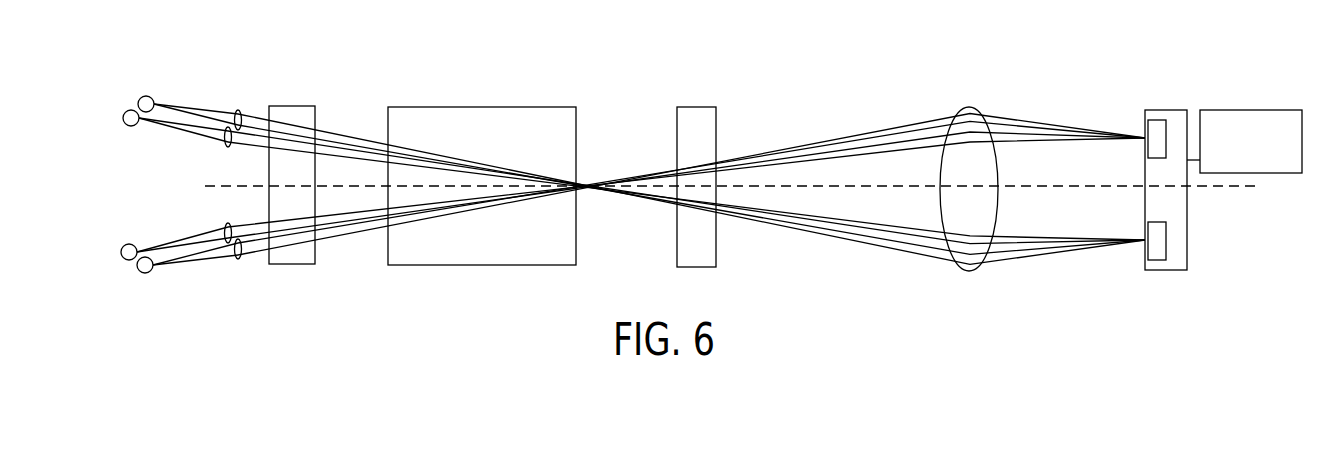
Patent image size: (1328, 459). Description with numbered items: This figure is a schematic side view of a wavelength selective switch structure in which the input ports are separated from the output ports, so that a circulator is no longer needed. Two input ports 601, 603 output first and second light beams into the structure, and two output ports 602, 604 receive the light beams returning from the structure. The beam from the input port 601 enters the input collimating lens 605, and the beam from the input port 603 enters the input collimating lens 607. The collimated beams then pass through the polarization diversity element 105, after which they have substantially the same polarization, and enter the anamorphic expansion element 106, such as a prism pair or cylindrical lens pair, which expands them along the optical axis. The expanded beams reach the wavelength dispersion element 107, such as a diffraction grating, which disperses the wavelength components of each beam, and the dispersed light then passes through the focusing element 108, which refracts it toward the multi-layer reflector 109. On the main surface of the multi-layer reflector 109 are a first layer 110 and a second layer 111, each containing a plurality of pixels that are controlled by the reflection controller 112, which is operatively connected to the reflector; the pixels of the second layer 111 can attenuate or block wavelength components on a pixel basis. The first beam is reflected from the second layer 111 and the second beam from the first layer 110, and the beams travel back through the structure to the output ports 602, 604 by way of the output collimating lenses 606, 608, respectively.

The input port 601 is at (138, 100).
The output port 602 is at (123, 116).
The input port 603 is at (121, 250).
The output port 604 is at (137, 270).
The input collimating lens 605 is at (239, 111).
The output collimating lens 606 is at (226, 146).
The input collimating lens 607 is at (226, 225).
The output collimating lens 608 is at (241, 258).
The polarization diversity element 105 is at (300, 105).
The anamorphic expansion element 106 is at (533, 106).
The wavelength dispersion element 107 is at (701, 106).
The focusing element 108 is at (968, 107).
The multi-layer reflector 109 is at (1173, 117).
The first layer 110 is at (1157, 130).
The second layer 111 is at (1157, 252).
The reflection controller 112 is at (1245, 110).